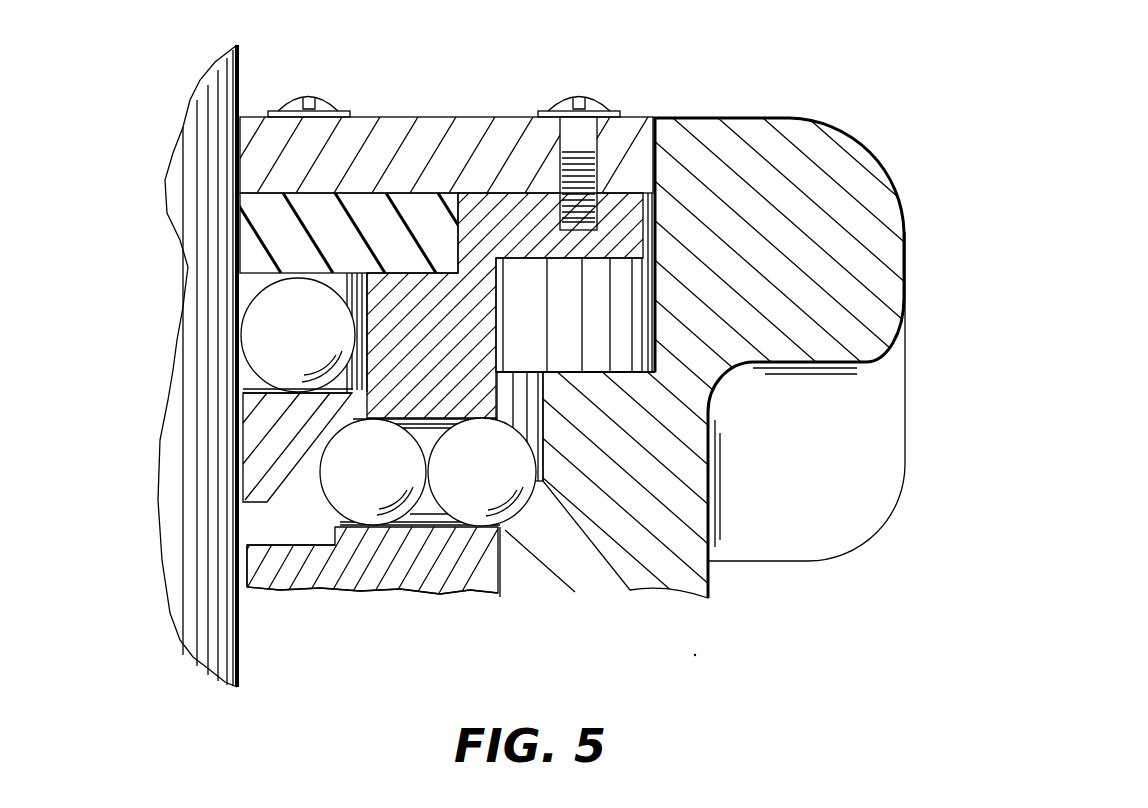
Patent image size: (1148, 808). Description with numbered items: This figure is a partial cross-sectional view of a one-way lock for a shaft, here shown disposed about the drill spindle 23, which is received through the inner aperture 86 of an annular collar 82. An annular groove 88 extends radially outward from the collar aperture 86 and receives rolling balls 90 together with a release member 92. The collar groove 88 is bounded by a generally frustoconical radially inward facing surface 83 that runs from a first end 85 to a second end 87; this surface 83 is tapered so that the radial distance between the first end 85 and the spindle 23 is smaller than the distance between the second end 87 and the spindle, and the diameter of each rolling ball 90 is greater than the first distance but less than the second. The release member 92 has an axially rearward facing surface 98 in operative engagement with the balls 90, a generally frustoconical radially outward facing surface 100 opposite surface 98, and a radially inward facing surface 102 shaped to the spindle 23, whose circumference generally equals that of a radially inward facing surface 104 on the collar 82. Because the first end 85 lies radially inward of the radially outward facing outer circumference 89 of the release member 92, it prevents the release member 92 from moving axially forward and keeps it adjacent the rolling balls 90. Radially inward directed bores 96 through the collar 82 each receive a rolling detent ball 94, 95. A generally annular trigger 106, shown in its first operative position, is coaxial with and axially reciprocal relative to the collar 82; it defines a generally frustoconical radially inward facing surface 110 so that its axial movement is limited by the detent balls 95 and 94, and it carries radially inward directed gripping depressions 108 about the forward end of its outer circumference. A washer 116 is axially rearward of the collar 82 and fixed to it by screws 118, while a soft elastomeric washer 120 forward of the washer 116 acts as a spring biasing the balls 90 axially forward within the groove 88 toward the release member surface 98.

The drill spindle 23 is at (248, 286).
The annular collar 82 is at (643, 238).
The frustoconical radially inward facing surface 83 is at (353, 392).
The first end 85 is at (405, 414).
The inner aperture 86 is at (252, 528).
The second end 87 is at (368, 277).
The annular groove 88 is at (304, 524).
The radially outward facing outer circumference 89 is at (247, 398).
The rolling balls 90 is at (250, 302).
The release member 92 is at (243, 470).
The rolling detent ball 94 is at (374, 590).
The rolling detent ball 95 is at (450, 520).
The radially inward directed bores 96 is at (432, 518).
The axially rearward facing surface 98 is at (253, 383).
The frustoconical radially outward facing surface 100 is at (245, 562).
The radially inward facing surface 102 is at (243, 436).
The radially inward facing surface 104 is at (233, 592).
The trigger 106 is at (906, 300).
The gripping depressions 108 is at (795, 368).
The frustoconical radially inward facing surface 110 is at (507, 535).
The washer 116 is at (430, 117).
The screws 118 is at (598, 96).
The soft elastomeric washer 120 is at (357, 190).